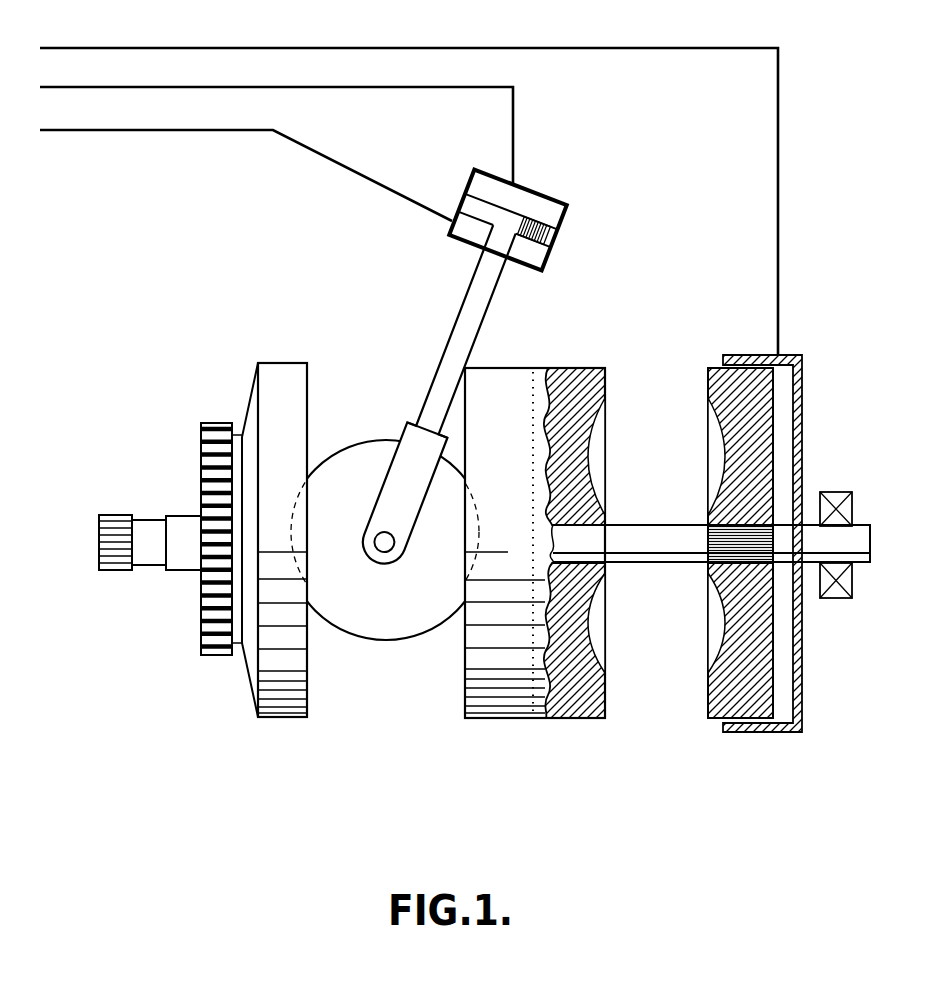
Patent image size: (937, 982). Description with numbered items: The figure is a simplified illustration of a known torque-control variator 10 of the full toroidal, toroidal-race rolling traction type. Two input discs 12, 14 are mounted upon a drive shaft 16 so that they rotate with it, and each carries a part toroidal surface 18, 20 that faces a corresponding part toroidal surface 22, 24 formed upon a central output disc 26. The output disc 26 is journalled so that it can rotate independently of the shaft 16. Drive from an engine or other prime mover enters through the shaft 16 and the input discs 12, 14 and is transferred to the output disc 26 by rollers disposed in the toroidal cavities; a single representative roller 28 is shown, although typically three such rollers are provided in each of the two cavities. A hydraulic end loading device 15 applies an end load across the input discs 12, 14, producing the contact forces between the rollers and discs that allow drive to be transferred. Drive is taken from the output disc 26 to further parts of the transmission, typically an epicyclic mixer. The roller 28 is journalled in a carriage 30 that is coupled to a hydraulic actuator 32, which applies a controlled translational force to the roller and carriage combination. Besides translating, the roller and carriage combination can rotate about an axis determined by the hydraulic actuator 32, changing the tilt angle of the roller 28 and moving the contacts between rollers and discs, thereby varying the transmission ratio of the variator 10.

The torque-control variator 10 is at (382, 790).
The input disc 12 is at (287, 415).
The input disc 14 is at (720, 722).
The hydraulic end loading device 15 is at (828, 696).
The drive shaft 16 is at (173, 570).
The part toroidal surface 18 is at (300, 437).
The part toroidal surface 20 is at (720, 448).
The part toroidal surface 22 is at (495, 700).
The part toroidal surface 24 is at (593, 673).
The central output disc 26 is at (509, 443).
The roller 28 is at (357, 633).
The carriage 30 is at (398, 438).
The hydraulic actuator 32 is at (578, 262).